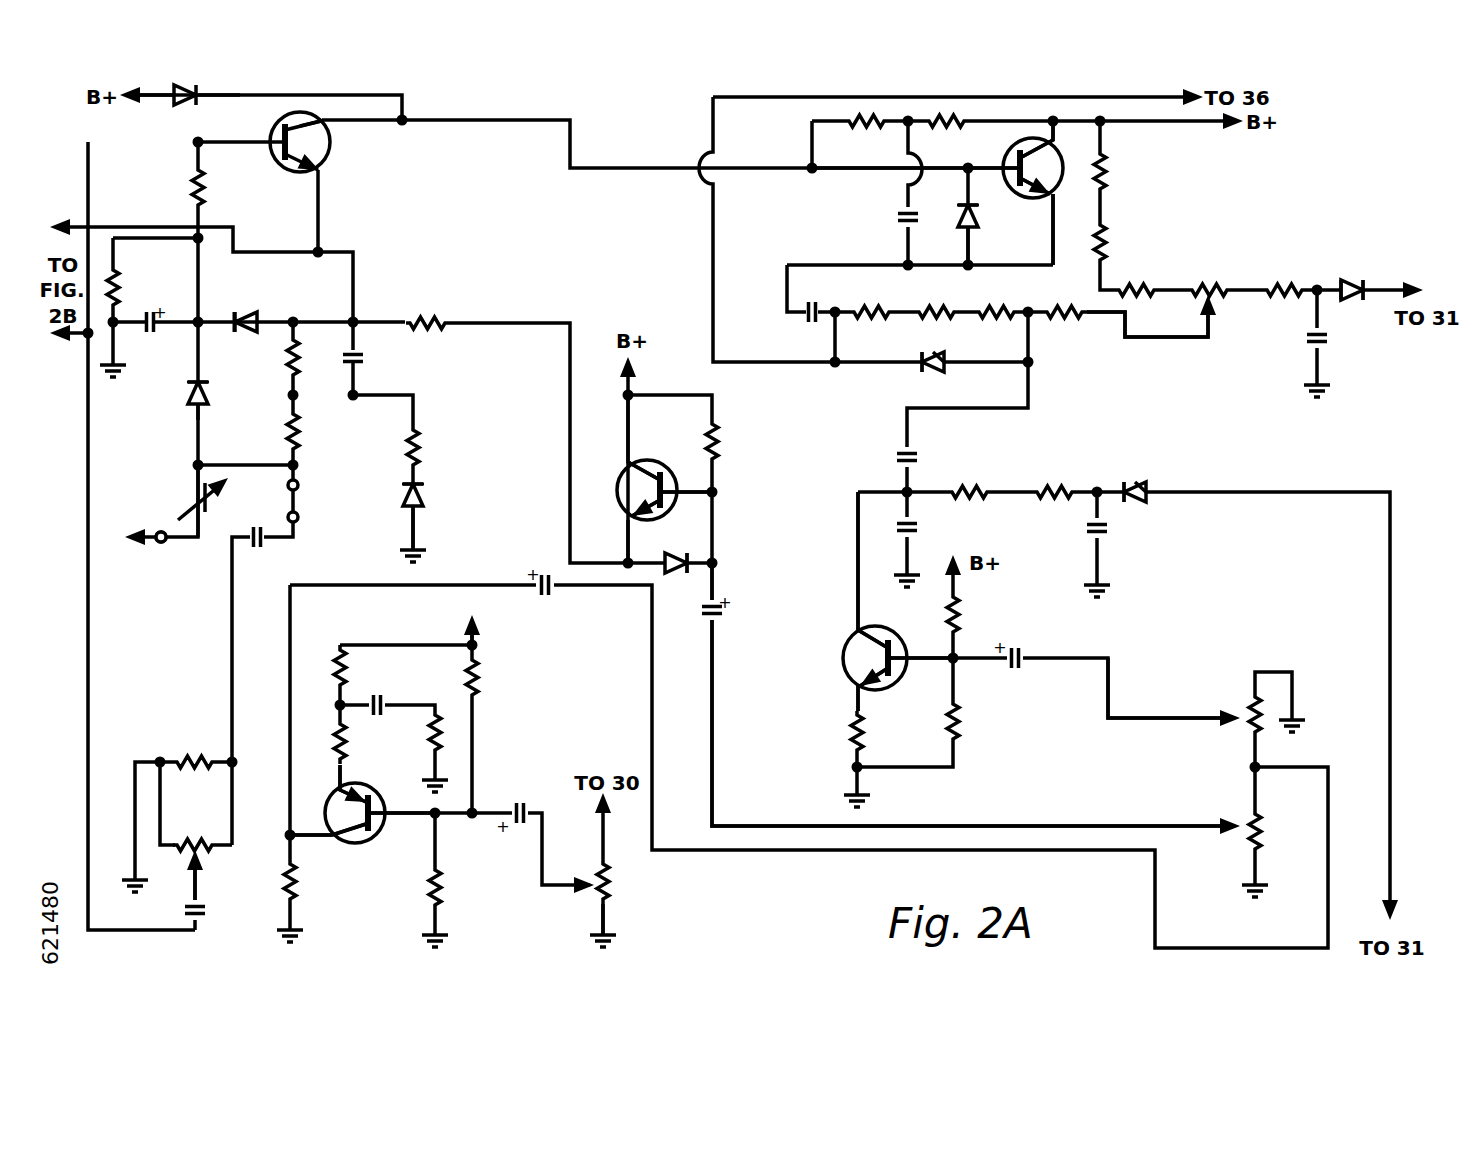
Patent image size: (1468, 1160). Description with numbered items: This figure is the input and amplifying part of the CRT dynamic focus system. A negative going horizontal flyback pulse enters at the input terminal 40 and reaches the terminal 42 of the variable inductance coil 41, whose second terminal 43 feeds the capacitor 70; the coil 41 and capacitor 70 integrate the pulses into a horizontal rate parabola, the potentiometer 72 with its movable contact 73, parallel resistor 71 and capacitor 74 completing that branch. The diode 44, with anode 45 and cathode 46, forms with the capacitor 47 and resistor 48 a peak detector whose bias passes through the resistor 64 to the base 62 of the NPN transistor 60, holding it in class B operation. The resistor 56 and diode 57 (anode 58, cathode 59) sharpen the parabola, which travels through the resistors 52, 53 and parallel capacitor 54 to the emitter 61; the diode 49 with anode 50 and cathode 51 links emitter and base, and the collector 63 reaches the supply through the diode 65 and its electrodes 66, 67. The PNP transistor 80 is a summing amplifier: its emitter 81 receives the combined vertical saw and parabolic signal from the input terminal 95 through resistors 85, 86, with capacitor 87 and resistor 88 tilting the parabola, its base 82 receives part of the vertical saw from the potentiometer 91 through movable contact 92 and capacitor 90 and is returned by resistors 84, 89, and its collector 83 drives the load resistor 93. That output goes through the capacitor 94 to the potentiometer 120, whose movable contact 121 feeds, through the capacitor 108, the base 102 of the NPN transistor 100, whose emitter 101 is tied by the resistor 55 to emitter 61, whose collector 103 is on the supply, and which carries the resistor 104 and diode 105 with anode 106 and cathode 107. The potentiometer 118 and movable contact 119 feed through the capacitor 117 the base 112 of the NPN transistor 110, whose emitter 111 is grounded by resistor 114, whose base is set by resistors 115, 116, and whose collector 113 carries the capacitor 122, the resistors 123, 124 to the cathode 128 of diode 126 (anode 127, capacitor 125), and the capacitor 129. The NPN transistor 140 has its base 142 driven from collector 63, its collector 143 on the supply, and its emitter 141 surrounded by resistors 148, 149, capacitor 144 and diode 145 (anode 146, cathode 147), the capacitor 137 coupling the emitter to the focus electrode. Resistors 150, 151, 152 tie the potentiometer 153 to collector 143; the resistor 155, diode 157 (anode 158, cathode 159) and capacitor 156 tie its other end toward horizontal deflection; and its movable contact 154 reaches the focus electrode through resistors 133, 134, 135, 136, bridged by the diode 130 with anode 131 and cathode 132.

The input terminal 40 is at (160, 545).
The variable inductance coil 41 is at (190, 500).
The terminal 42 is at (200, 535).
The second terminal 43 is at (193, 478).
The diode 44 is at (210, 390).
The anode 45 is at (195, 412).
The cathode 46 is at (190, 382).
The capacitor 47 is at (153, 333).
The resistor 48 is at (120, 285).
The diode 49 is at (246, 334).
The anode 50 is at (258, 312).
The cathode 51 is at (233, 312).
The resistor 52 is at (300, 432).
The resistor 53 is at (300, 350).
The capacitor 54 is at (365, 358).
The resistor 55 is at (425, 313).
The resistor 56 is at (420, 430).
The diode 57 is at (425, 500).
The anode 58 is at (405, 525).
The cathode 59 is at (405, 488).
The NPN transistor 60 is at (288, 175).
The emitter electrode 61 is at (322, 172).
The base electrode 62 is at (275, 156).
The collector electrode 63 is at (328, 128).
The resistor 64 is at (190, 190).
The diode 65 is at (188, 105).
The anode 66 is at (170, 100).
The cathode 67 is at (200, 100).
The capacitor 70 is at (258, 548).
The resistor 71 is at (195, 752).
The potentiometer 72 is at (195, 835).
The movable contact 73 is at (205, 862).
The capacitor 74 is at (205, 912).
The PNP transistor 80 is at (365, 848).
The emitter electrode 81 is at (350, 782).
The base electrode 82 is at (392, 822).
The collector electrode 83 is at (333, 850).
The resistor 84 is at (445, 885).
The resistor 85 is at (335, 733).
The resistor 86 is at (335, 665).
The capacitor 87 is at (378, 695).
The resistor 88 is at (425, 735).
The resistor 89 is at (480, 680).
The capacitor 90 is at (520, 800).
The potentiometer 91 is at (612, 885).
The movable contact 92 is at (595, 905).
The resistor 93 is at (300, 895).
The capacitor 94 is at (545, 600).
The input terminal 95 is at (462, 632).
The NPN transistor 100 is at (650, 462).
The emitter electrode 101 is at (620, 520).
The base electrode 102 is at (712, 490).
The collector electrode 103 is at (620, 462).
The resistor 104 is at (722, 440).
The diode 105 is at (687, 550).
The anode electrode 106 is at (665, 555).
The cathode 107 is at (700, 585).
The capacitor 108 is at (725, 612).
The NPN transistor 110 is at (843, 660).
The emitter electrode 111 is at (855, 690).
The base electrode 112 is at (905, 655).
The collector electrode 113 is at (850, 640).
The resistor 114 is at (848, 735).
The resistor 115 is at (965, 612).
The resistor 116 is at (965, 722).
The capacitor 117 is at (1025, 655).
The potentiometer 118 is at (1248, 738).
The movable contact 119 is at (1245, 708).
The potentiometer 120 is at (1248, 840).
The movable contact 121 is at (1245, 820).
The capacitor 122 is at (920, 527).
The resistor 123 is at (975, 482).
The resistor 124 is at (1052, 482).
The capacitor 125 is at (1085, 528).
The diode 126 is at (1138, 505).
The anode 127 is at (1150, 482).
The cathode 128 is at (1125, 482).
The capacitor 129 is at (895, 457).
The diode 130 is at (925, 352).
The anode 131 is at (945, 373).
The cathode 132 is at (923, 373).
The resistor 133 is at (872, 302).
The resistor 134 is at (937, 302).
The resistor 135 is at (997, 302).
The resistor 136 is at (1065, 325).
The capacitor 137 is at (812, 325).
The NPN transistor 140 is at (1006, 154).
The emitter electrode 141 is at (1055, 210).
The base electrode 142 is at (1005, 190).
The collector electrode 143 is at (1058, 135).
The capacitor 144 is at (895, 217).
The diode 145 is at (980, 225).
The anode 146 is at (960, 232).
The cathode 147 is at (962, 205).
The resistor 148 is at (944, 133).
The resistor 149 is at (866, 133).
The resistor 150 is at (1110, 170).
The resistor 151 is at (1110, 240).
The resistor 152 is at (1140, 282).
The potentiometer 153 is at (1210, 280).
The movable contact 154 is at (1220, 312).
The resistor 155 is at (1285, 280).
The capacitor 156 is at (1305, 338).
The diode 157 is at (1352, 302).
The anode 158 is at (1343, 280).
The cathode 159 is at (1364, 280).